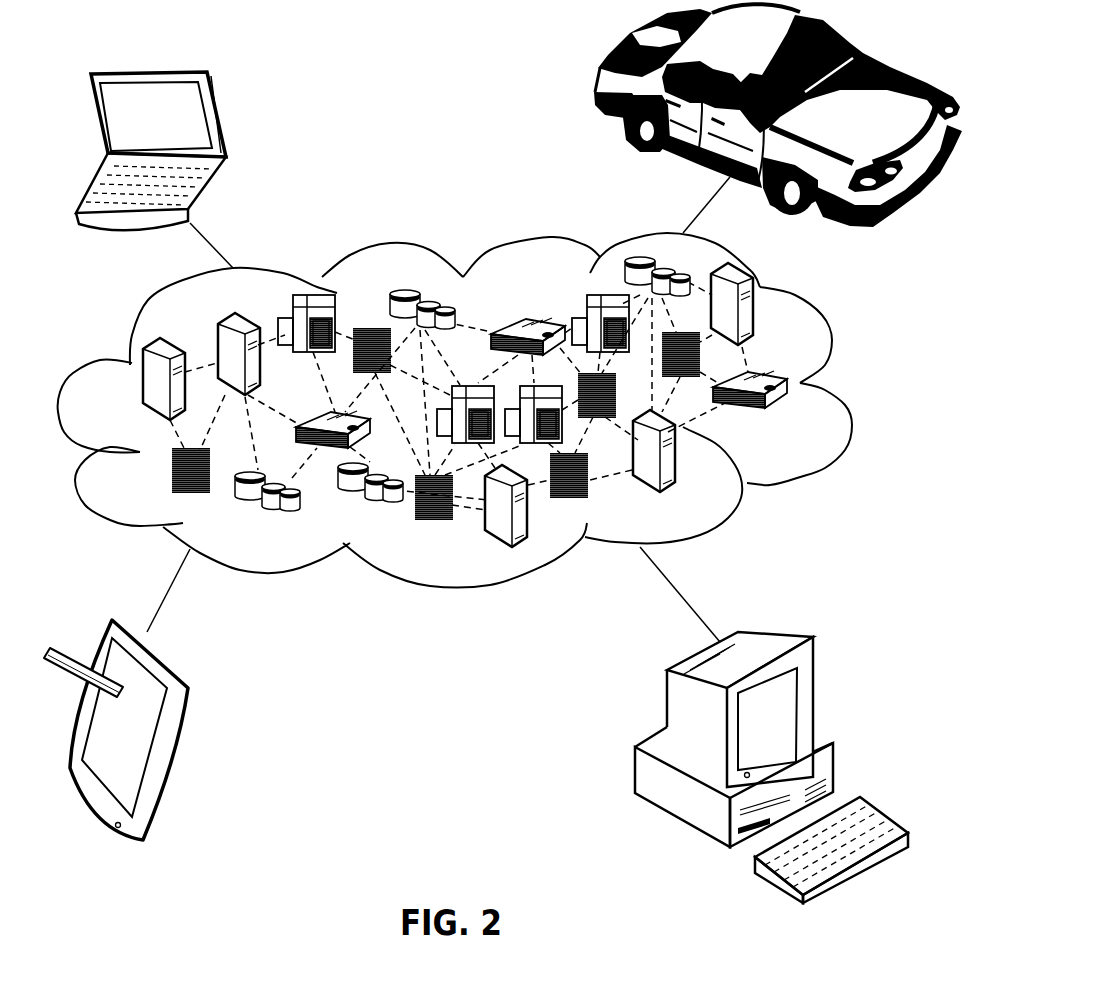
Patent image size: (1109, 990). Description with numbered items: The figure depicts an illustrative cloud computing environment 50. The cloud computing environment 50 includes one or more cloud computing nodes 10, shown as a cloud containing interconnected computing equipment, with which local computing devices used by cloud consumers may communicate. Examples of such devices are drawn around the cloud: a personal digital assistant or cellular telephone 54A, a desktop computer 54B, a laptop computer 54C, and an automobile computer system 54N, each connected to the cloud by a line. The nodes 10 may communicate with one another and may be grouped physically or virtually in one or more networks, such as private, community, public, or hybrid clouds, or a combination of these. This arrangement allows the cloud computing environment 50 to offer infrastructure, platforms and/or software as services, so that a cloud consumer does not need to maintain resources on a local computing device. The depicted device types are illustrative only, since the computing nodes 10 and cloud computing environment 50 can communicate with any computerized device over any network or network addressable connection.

The cloud computing environment 50 is at (488, 410).
The cloud computing nodes 10 is at (805, 422).
The personal digital assistant (PDA) or cellular telephone 54A is at (183, 717).
The desktop computer 54B is at (777, 632).
The laptop computer 54C is at (220, 122).
The automobile computer system 54N is at (597, 92).